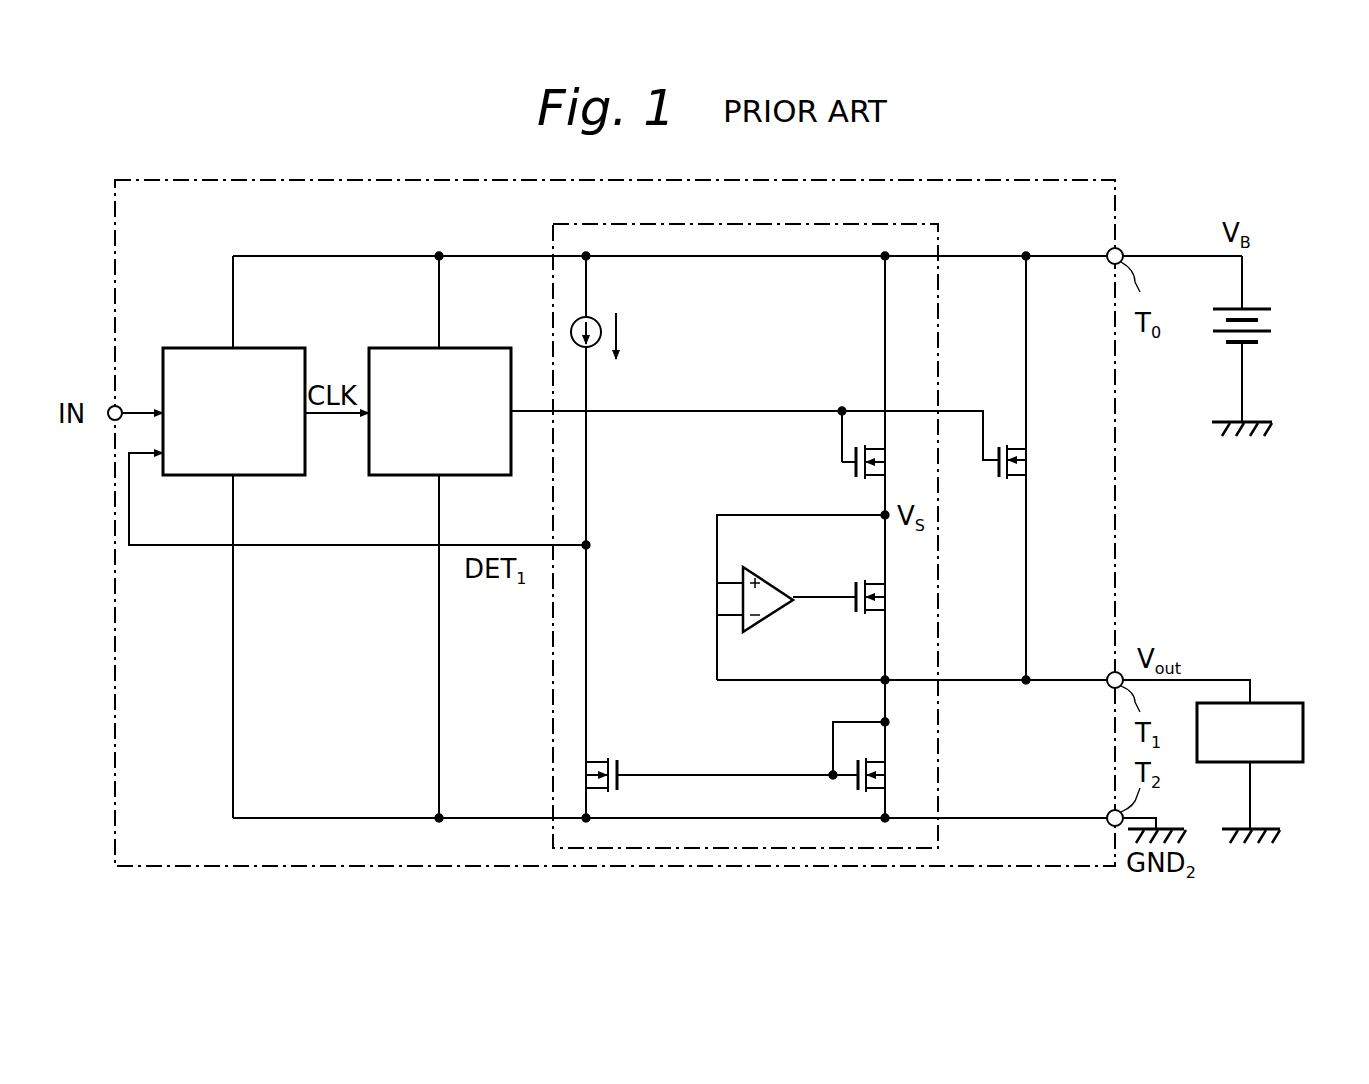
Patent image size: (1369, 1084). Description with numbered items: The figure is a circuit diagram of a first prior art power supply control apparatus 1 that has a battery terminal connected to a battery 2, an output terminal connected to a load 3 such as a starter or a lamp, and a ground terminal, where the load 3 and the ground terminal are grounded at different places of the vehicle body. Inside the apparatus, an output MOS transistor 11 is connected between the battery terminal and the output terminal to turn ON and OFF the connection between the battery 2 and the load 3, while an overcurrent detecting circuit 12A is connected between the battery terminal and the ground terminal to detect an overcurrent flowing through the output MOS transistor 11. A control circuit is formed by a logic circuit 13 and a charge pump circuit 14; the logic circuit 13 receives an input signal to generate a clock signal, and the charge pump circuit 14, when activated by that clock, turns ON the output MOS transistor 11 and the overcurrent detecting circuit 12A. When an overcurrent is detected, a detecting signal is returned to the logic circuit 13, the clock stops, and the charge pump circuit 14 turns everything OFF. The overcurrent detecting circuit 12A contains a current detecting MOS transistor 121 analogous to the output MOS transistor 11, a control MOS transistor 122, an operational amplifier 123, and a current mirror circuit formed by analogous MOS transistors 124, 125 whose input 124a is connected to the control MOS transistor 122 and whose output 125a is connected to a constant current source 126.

The power supply control apparatus 1 is at (955, 180).
The overcurrent detecting circuit 12A is at (910, 224).
The logic circuit 13 is at (258, 348).
The charge pump circuit 14 is at (463, 348).
The constant current source 126 is at (598, 318).
The current detecting MOS transistor 121 is at (850, 462).
The control MOS transistor 122 is at (872, 614).
The operational amplifier 123 is at (757, 575).
The MOS transistor 124 is at (870, 792).
The input 124a is at (882, 720).
The MOS transistor 125 is at (606, 760).
The output 125a is at (590, 545).
The output MOS transistor 11 is at (1012, 460).
The battery 2 is at (1274, 320).
The load 3 is at (1275, 703).